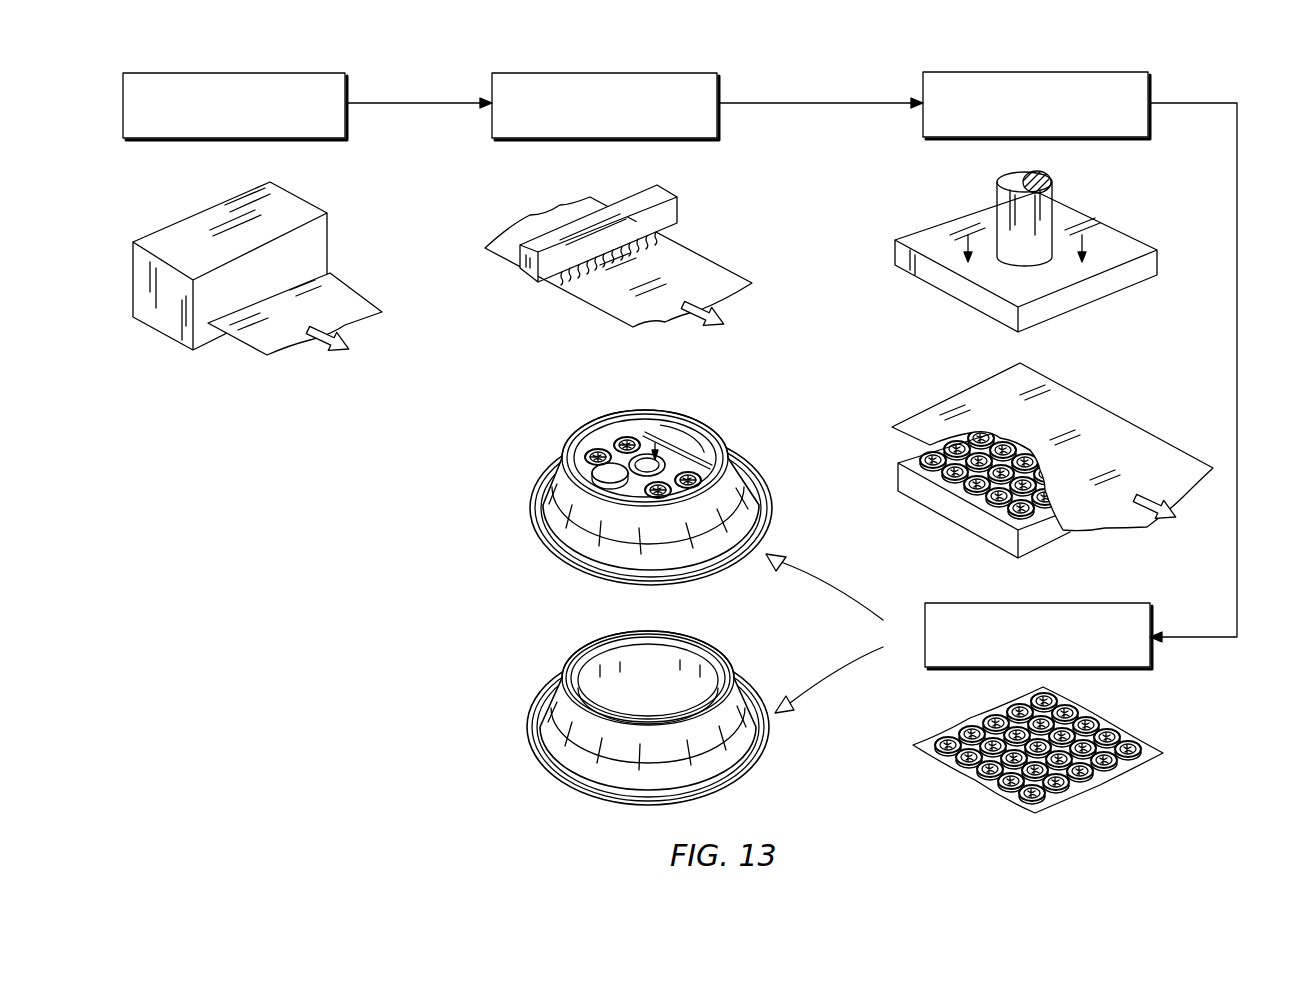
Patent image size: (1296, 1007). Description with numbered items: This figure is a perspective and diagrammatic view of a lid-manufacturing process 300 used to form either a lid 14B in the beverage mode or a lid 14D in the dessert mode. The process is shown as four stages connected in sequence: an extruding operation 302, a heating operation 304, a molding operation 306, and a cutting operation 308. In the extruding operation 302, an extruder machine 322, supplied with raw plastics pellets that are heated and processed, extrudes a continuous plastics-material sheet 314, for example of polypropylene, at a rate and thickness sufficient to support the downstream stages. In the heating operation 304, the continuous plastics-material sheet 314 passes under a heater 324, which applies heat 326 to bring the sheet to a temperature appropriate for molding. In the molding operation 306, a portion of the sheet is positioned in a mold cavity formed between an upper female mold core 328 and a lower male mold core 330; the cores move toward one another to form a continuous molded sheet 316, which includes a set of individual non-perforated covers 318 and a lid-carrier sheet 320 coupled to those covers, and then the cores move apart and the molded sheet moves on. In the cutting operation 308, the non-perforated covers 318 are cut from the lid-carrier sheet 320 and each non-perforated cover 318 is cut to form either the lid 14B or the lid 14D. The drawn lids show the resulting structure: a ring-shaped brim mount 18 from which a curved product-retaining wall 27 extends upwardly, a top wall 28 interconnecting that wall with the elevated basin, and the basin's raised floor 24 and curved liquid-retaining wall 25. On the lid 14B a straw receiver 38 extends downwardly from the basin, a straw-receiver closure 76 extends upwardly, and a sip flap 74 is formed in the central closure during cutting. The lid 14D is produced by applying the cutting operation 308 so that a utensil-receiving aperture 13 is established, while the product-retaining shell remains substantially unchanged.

The lid-manufacturing process 300 is at (1256, 126).
The extruding operation 302 is at (347, 140).
The heating operation 304 is at (719, 140).
The molding operation 306 is at (1149, 139).
The cutting operation 308 is at (1151, 668).
The continuous plastics-material sheet 314 is at (296, 340).
The continuous molded sheet 316 is at (988, 800).
The non-perforated cover 318 is at (957, 768).
The lid-carrier sheet 320 is at (967, 727).
The extruder machine 322 is at (165, 322).
The heater 324 is at (520, 275).
The heat 326 is at (665, 239).
The upper female mold core 328 is at (1113, 285).
The lower male mold core 330 is at (907, 483).
The lid in beverage mode 14B is at (637, 493).
The lid in dessert mode 14D is at (626, 734).
The utensil-receiving aperture 13 is at (657, 658).
The ring-shaped brim mount 18 is at (636, 590).
The raised floor 24 is at (622, 437).
The curved liquid-retaining wall 25 is at (683, 425).
The curved product-retaining wall 27 is at (737, 487).
The top wall 28 is at (725, 415).
The straw receiver 38 is at (657, 452).
The sip flap 74 is at (580, 492).
The straw-receiver closure 76 is at (590, 451).